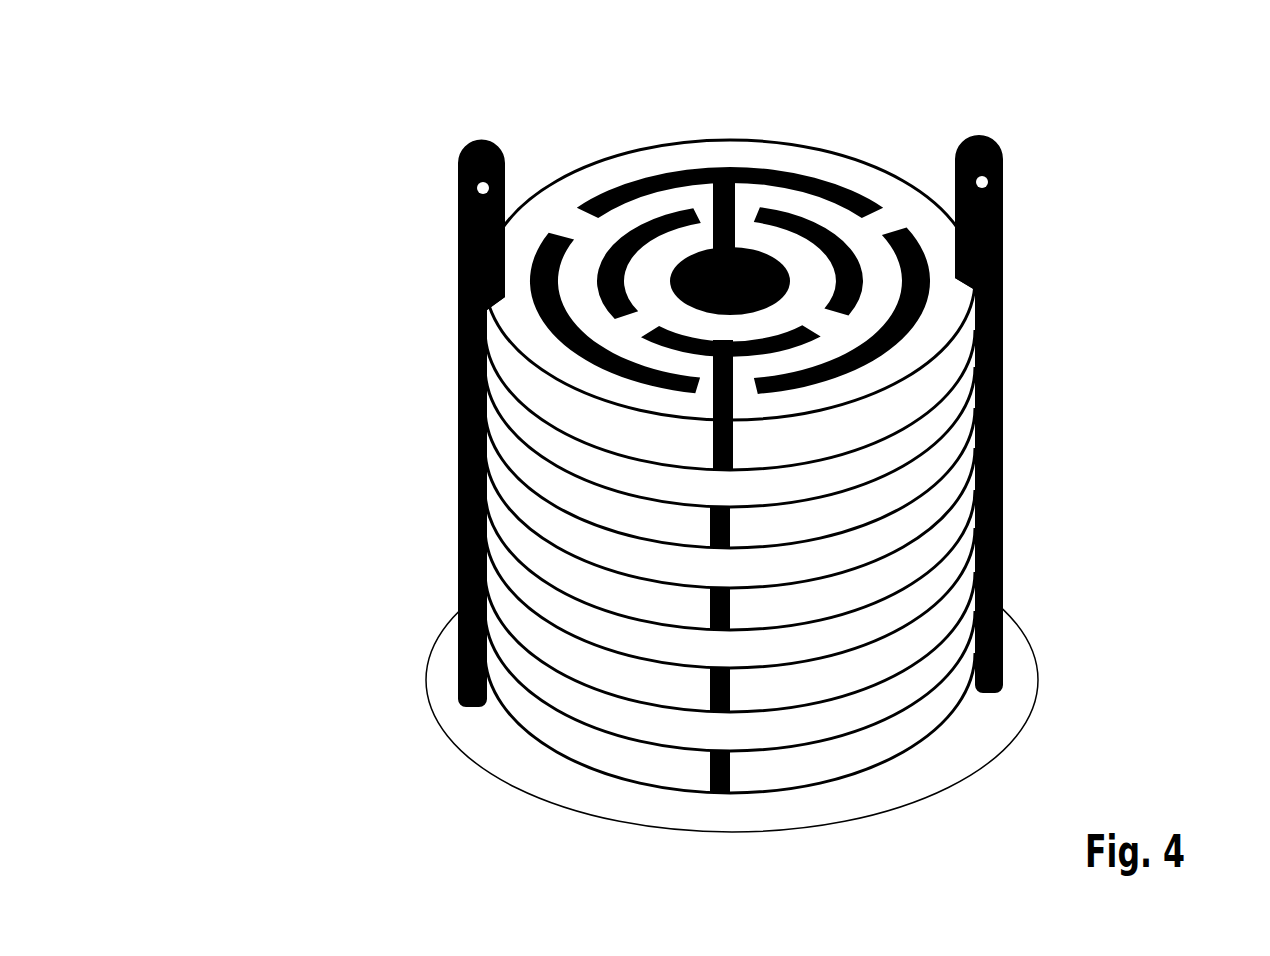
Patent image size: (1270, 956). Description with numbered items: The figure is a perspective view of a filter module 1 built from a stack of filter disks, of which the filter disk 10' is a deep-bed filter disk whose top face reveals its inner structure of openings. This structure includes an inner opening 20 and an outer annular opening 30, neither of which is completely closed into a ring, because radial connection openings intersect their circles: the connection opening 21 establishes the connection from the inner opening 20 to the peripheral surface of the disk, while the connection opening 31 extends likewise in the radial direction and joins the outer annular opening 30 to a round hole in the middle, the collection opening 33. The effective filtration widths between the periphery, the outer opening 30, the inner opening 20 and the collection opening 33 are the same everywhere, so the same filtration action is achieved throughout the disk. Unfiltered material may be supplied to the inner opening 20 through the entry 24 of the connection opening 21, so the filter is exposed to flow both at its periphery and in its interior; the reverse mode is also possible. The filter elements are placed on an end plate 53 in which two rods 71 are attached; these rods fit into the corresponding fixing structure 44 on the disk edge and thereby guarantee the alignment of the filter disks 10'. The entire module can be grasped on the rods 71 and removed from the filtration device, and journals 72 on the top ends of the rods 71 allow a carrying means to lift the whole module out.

The filter module 1 is at (732, 447).
The deep-bed filter disk 10' is at (586, 466).
The inner opening 20 is at (797, 210).
The connection opening 21 is at (733, 382).
The entry of the connection opening 24 is at (730, 608).
The outer annular opening 30 is at (617, 190).
The connection opening 31 is at (690, 173).
The collection opening 33 is at (785, 270).
The fixing structure 44 is at (460, 313).
The end plate 53 is at (962, 728).
The rod 71 is at (762, 408).
The journal 72 is at (460, 185).